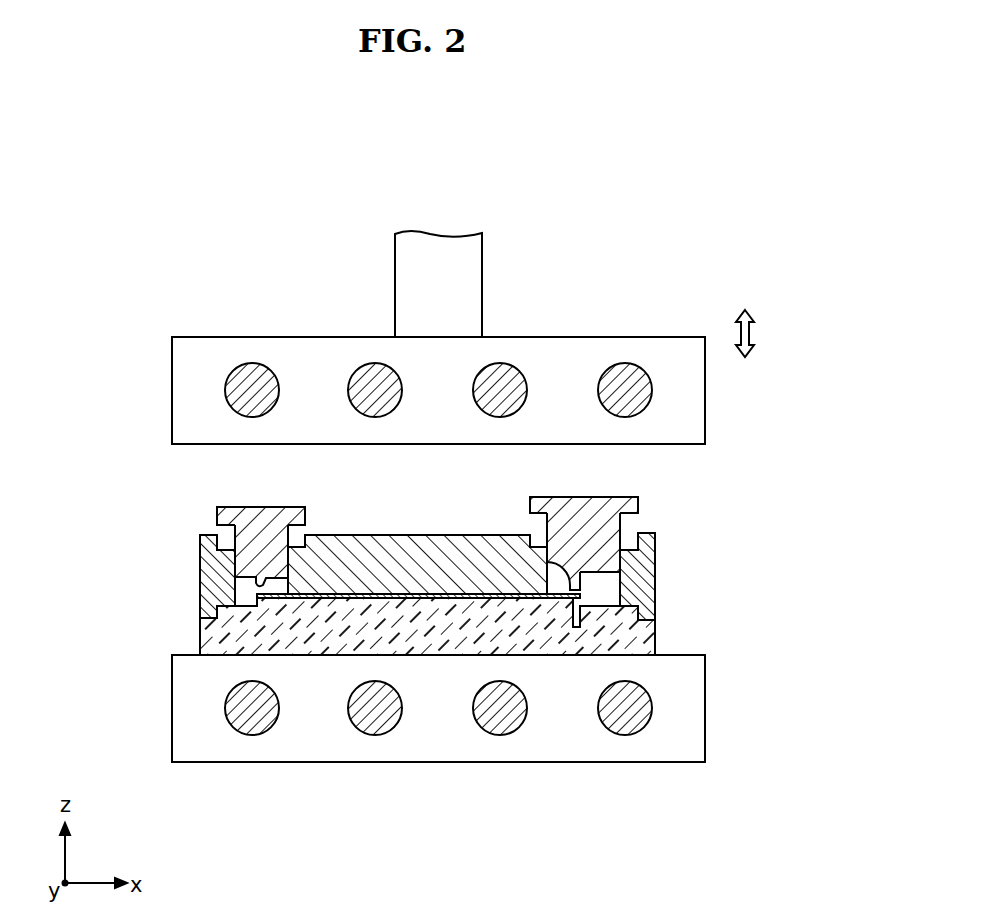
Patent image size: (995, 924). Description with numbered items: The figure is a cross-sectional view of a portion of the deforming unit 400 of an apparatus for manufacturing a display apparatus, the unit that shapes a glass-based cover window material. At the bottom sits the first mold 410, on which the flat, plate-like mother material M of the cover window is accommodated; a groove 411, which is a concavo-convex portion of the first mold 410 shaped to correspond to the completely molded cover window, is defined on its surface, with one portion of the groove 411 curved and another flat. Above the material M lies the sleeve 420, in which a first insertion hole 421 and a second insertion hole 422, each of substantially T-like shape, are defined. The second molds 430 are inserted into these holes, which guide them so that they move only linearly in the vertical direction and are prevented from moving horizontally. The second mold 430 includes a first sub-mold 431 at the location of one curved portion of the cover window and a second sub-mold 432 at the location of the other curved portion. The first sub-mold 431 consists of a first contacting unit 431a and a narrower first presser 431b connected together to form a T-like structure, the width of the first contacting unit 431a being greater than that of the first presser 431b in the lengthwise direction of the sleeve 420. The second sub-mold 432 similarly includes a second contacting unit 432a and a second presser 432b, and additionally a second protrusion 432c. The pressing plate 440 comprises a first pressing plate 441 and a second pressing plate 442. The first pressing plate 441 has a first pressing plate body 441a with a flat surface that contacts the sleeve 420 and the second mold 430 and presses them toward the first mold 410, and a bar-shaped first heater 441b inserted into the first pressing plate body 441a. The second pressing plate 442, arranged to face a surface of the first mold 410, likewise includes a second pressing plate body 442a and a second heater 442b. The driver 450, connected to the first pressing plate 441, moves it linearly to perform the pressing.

The deforming unit 400 is at (108, 249).
The first mold 410 is at (210, 636).
The groove 411 is at (266, 606).
The sleeve 420 is at (380, 534).
The first insertion hole 421 is at (243, 595).
The second insertion hole 422 is at (603, 603).
The second mold 430 is at (152, 446).
The first sub-mold 431 is at (210, 531).
The first contacting unit 431a is at (235, 504).
The first presser 431b is at (245, 552).
The second sub-mold 432 is at (439, 522).
The second contacting unit 432a is at (638, 505).
The second presser 432b is at (640, 534).
The second protrusion 432c is at (577, 583).
The pressing plate 440 is at (803, 390).
The first pressing plate 441 is at (444, 364).
The first pressing plate body 441a is at (178, 391).
The first heater 441b is at (241, 378).
The second pressing plate 442 is at (444, 735).
The second pressing plate body 442a is at (178, 707).
The second heater 442b is at (238, 728).
The driver 450 is at (470, 288).
The mother material M is at (435, 600).